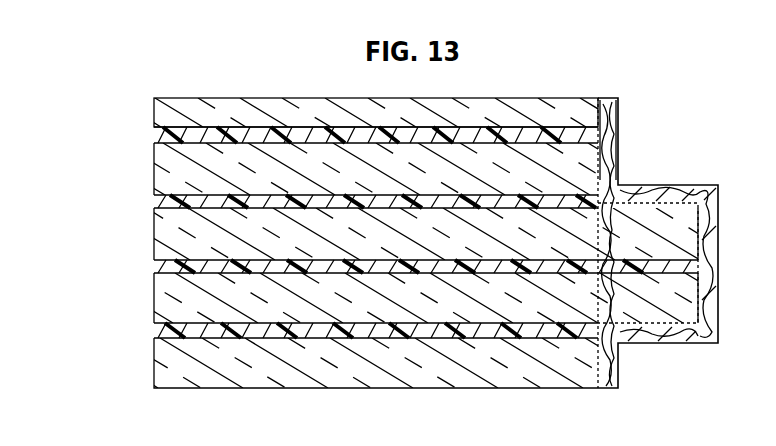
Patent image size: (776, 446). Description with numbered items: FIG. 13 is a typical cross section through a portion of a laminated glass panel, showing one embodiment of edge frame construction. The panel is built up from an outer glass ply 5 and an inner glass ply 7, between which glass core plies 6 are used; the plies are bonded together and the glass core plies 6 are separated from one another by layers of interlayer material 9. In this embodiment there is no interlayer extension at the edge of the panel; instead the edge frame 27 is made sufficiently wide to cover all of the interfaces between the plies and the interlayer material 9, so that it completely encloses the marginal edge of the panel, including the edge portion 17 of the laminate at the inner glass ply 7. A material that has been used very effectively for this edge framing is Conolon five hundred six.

The outer glass ply 5 is at (165, 377).
The glass core plies 6 is at (159, 287).
The inner glass ply 7 is at (155, 109).
The interlayer material 9 is at (235, 193).
The end edge portion 17 is at (597, 110).
The edge frame 27 is at (710, 238).